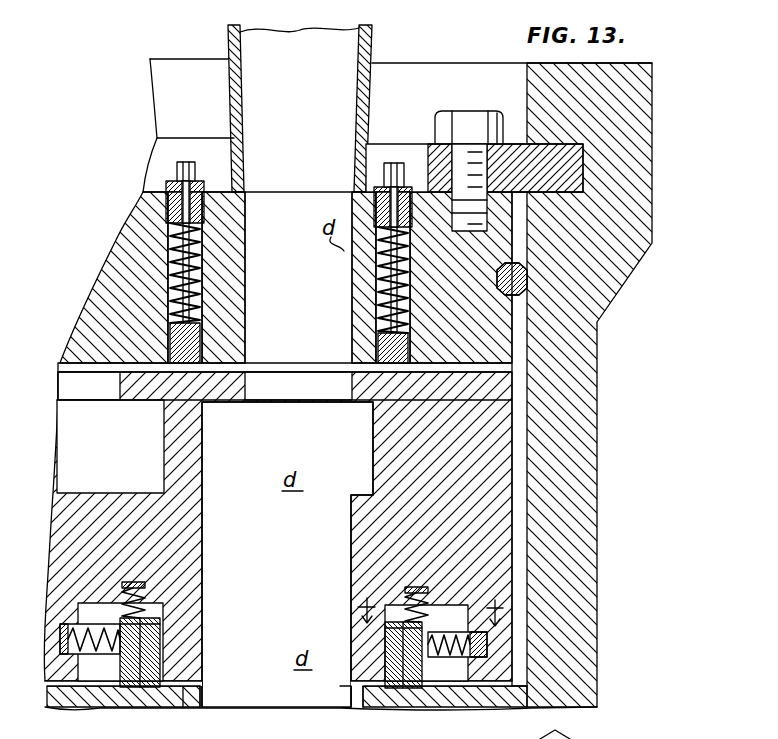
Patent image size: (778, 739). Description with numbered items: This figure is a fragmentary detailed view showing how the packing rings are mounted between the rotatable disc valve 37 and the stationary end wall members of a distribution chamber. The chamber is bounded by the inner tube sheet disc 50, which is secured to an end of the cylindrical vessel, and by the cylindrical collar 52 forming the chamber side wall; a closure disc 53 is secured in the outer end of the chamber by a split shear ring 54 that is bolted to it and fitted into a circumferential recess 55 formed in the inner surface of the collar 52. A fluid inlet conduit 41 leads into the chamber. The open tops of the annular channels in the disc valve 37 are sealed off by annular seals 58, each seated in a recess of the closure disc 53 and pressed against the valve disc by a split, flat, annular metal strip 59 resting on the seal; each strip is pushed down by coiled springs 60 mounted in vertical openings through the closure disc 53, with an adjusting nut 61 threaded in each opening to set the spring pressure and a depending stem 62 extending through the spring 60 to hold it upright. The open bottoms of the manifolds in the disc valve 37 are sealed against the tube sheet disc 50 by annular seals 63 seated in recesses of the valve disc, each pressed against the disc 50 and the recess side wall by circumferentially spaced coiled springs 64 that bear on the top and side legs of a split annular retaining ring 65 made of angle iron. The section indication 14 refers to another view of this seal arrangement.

The section line 14 is at (434, 598).
The double-faced rotatable disc valve 37 is at (462, 492).
The fluid inlet conduit 41 is at (375, 53).
The inner tube sheet disc 50 is at (377, 707).
The cylindrical collar 52 is at (598, 256).
The closure disc 53 is at (466, 325).
The split shear ring 54 is at (583, 163).
The circumferential recess 55 is at (562, 143).
The annular seal 58 is at (169, 346).
The split flat annular metal strip 59 is at (167, 317).
The coiled spring 60 is at (167, 258).
The adjusting nut 61 is at (194, 180).
The depending stem 62 is at (202, 242).
The annular seal 63 is at (162, 641).
The coiled spring 64 is at (70, 622).
The split annular retaining ring 65 is at (120, 603).